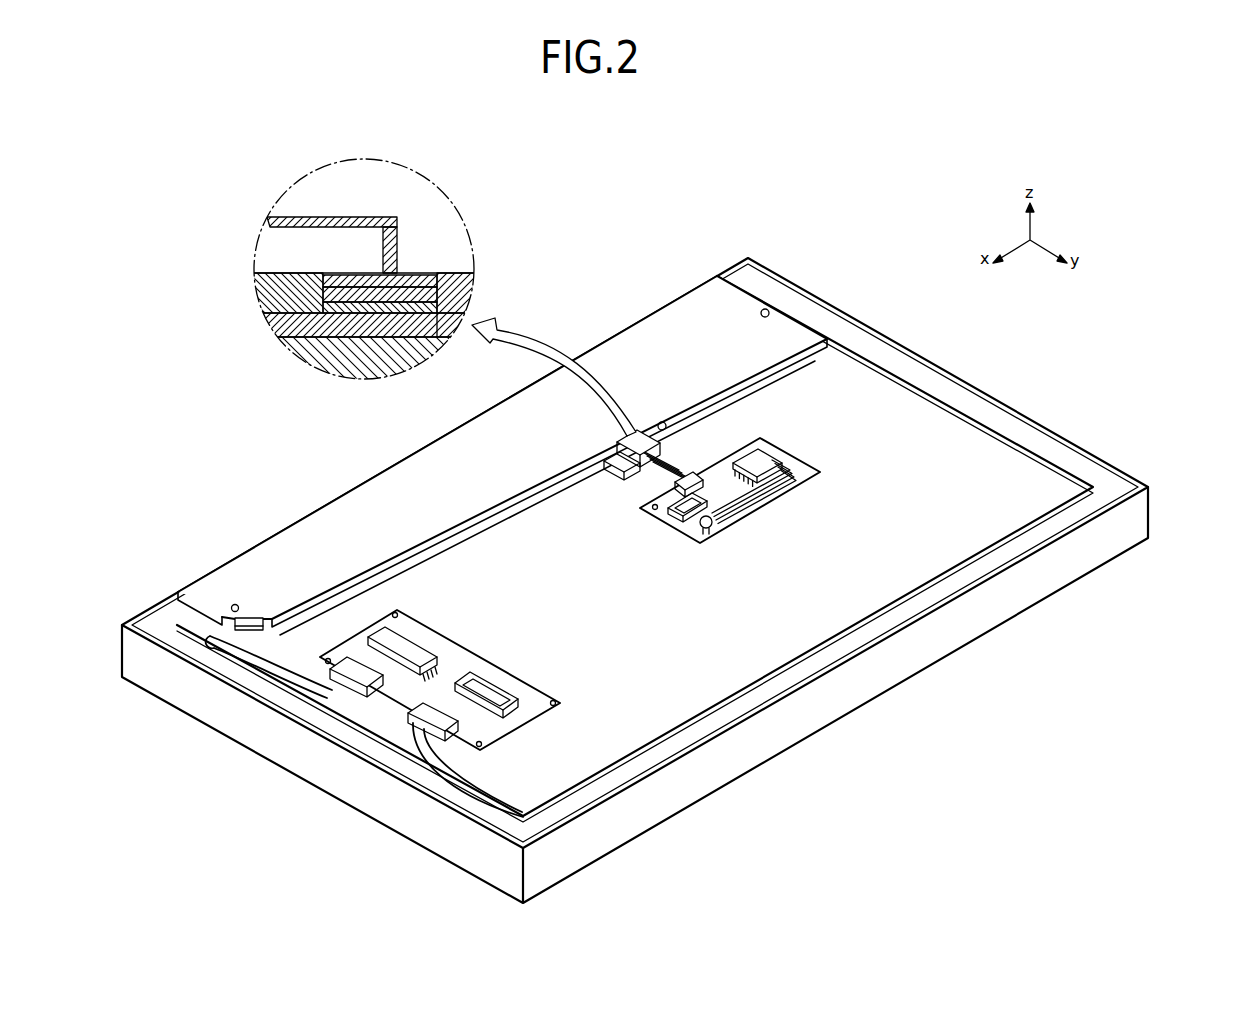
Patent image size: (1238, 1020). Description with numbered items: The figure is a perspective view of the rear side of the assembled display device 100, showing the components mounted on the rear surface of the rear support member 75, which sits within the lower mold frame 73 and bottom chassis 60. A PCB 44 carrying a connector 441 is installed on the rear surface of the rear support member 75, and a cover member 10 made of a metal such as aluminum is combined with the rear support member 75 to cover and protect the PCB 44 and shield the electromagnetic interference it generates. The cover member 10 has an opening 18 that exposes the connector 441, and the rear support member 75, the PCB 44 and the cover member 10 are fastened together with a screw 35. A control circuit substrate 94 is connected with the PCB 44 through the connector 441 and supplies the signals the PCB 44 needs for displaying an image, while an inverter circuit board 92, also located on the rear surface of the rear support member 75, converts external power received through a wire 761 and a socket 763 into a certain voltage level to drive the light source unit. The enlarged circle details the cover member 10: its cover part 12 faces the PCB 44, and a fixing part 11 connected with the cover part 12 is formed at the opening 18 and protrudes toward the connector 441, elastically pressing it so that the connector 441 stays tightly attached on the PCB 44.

The liquid crystal display 100 is at (617, 241).
The cover member 10 is at (770, 330).
The fixing part 11 is at (608, 451).
The cover part 12 is at (323, 216).
The opening 18 is at (653, 430).
The screw 35 is at (765, 308).
The PCB 44 is at (277, 327).
The connector 441 is at (263, 297).
The bottom chassis 60 is at (1149, 505).
The lower mold frame 73 is at (847, 330).
The rear support member 75 is at (993, 467).
The inverter circuit board 92 is at (520, 720).
The control circuit substrate 94 is at (790, 445).
The wire 761 is at (323, 700).
The socket 763 is at (363, 700).